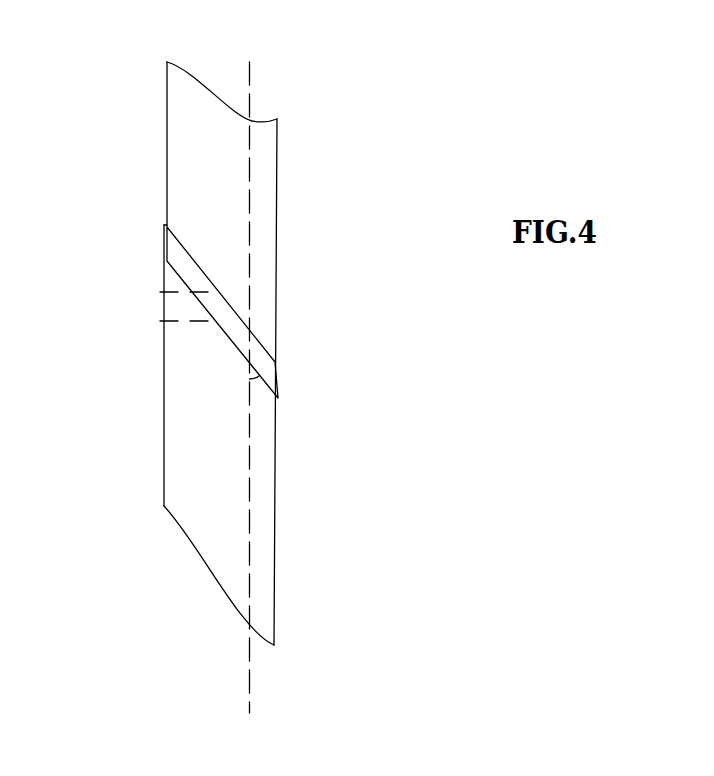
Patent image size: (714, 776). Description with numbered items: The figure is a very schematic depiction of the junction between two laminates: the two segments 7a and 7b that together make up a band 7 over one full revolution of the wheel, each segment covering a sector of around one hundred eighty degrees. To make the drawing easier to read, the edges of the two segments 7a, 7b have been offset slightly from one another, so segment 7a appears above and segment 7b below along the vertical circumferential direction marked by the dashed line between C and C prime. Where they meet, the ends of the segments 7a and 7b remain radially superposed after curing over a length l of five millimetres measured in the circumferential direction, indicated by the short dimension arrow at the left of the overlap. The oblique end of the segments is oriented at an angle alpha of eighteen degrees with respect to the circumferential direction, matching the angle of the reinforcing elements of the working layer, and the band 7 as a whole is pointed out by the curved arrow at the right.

The band 7 is at (366, 356).
The segment 7a is at (178, 115).
The segment 7b is at (178, 461).
The length l is at (147, 292).